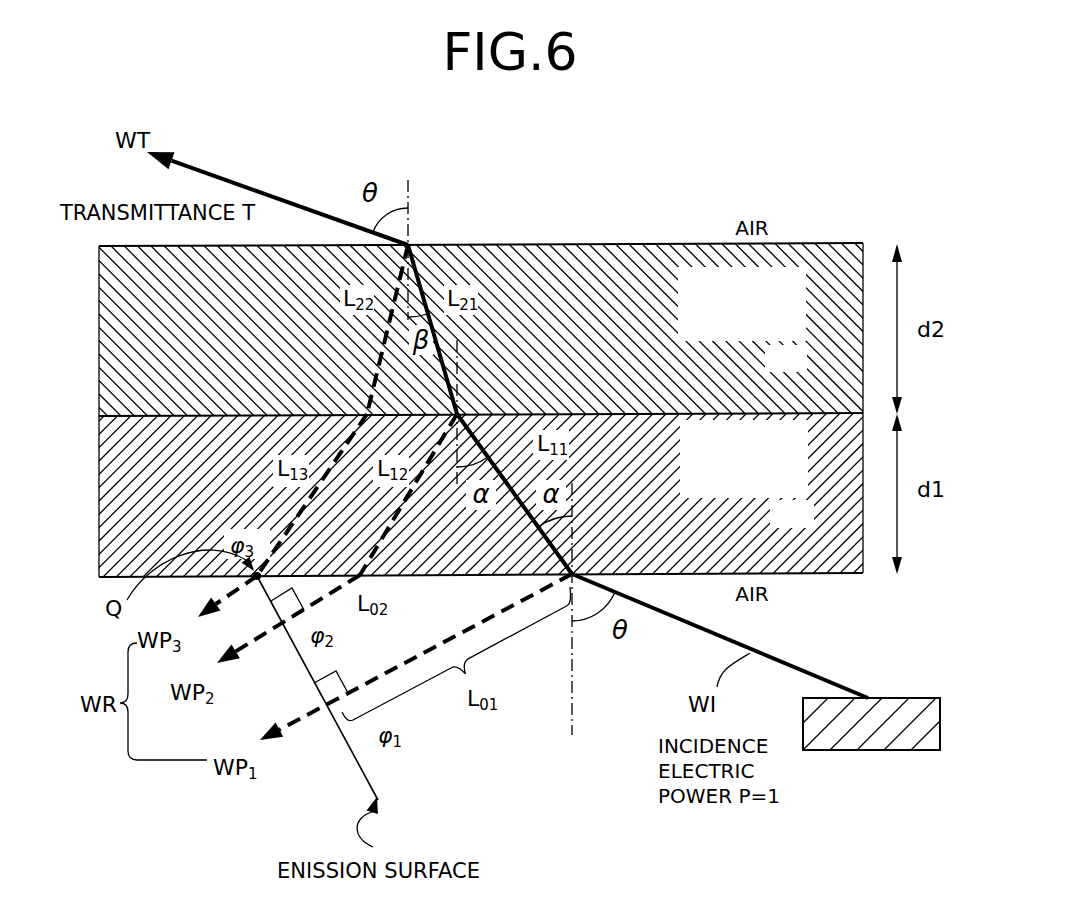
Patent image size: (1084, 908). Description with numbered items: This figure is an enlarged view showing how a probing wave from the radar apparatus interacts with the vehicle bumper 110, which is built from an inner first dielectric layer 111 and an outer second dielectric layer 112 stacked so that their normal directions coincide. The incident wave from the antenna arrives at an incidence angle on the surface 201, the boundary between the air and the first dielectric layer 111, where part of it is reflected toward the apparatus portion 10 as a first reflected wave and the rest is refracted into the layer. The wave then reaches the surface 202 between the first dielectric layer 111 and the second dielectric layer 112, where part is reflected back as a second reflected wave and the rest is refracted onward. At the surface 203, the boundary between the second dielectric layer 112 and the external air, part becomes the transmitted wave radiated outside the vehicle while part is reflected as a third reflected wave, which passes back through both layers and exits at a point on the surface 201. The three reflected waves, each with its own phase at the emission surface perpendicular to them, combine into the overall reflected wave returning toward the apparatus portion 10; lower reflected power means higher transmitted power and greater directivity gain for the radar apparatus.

The apparatus portion 10 is at (862, 750).
The bumper 110 is at (868, 127).
The first dielectric layer 111 is at (825, 440).
The second dielectric layer 112 is at (853, 273).
The surface 201 is at (820, 567).
The surface 202 is at (673, 417).
The surface 203 is at (584, 247).